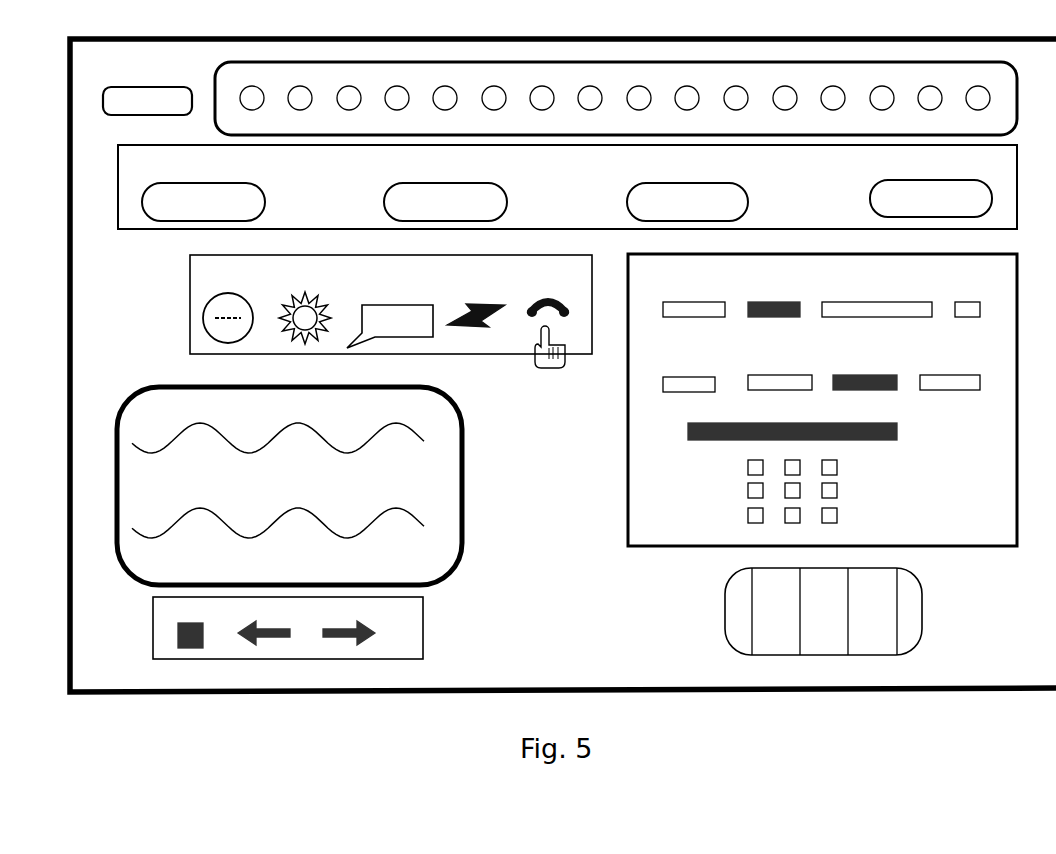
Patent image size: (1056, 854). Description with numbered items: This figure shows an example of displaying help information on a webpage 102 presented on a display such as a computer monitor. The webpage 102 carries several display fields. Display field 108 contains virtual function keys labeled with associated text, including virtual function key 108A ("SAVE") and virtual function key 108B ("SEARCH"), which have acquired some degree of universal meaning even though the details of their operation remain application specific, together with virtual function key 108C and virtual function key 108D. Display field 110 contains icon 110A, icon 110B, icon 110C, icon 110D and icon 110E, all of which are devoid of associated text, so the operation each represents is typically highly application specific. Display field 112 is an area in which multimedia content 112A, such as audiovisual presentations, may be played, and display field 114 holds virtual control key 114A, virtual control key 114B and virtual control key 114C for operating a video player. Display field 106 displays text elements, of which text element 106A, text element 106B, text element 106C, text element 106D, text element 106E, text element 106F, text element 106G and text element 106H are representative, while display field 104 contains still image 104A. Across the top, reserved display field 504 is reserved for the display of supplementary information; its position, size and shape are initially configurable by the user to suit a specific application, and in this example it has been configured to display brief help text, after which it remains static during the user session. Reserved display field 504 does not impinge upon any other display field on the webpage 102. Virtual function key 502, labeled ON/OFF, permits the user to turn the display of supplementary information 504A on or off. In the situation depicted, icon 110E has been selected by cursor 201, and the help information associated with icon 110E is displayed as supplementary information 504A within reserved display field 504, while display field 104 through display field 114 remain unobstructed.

The webpage 102 is at (787, 695).
The display field 104 is at (802, 626).
The still image 104A is at (817, 638).
The display field 106 is at (792, 400).
The text element 106A is at (694, 298).
The text element 106B is at (774, 298).
The text element 106C is at (877, 298).
The text element 106D is at (965, 298).
The text element 106E is at (689, 373).
The text element 106F is at (780, 371).
The text element 106G is at (865, 371).
The text element 106H is at (950, 371).
The display field 108 is at (550, 203).
The virtual function key 108A is at (203, 191).
The virtual function key 108B is at (445, 191).
The virtual function key 108C is at (687, 191).
The virtual function key 108D is at (931, 186).
The display field 110 is at (354, 304).
The icon 110A is at (228, 308).
The icon 110B is at (305, 308).
The icon 110C is at (390, 314).
The icon 110D is at (476, 301).
The icon 110E is at (547, 296).
The display field 112 is at (298, 494).
The multimedia content 112A is at (410, 535).
The display field 114 is at (253, 628).
The virtual control key 114A is at (192, 624).
The virtual control key 114B is at (264, 622).
The virtual control key 114C is at (349, 622).
The cursor 201 is at (552, 370).
The virtual function key 502 is at (145, 87).
The reserved display field 504 is at (588, 121).
The supplementary information 504A is at (514, 116).